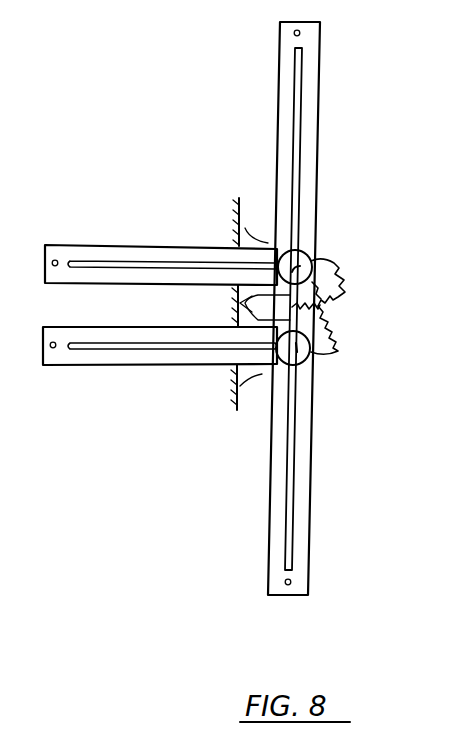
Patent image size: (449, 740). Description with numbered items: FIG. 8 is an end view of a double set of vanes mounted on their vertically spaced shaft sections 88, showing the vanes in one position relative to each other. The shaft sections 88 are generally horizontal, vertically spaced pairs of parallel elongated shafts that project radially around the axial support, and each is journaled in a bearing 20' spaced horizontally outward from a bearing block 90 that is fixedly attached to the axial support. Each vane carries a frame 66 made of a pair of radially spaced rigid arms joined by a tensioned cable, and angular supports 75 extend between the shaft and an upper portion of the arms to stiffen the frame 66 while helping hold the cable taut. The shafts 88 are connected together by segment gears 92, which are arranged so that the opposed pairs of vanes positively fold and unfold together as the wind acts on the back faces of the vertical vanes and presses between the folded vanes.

The frame 66 is at (318, 124).
The angular support 75 is at (302, 98).
The bearing 20' is at (224, 309).
The shaft section 88 is at (310, 263).
The bearing block 90 is at (224, 329).
The spring 92 is at (333, 330).